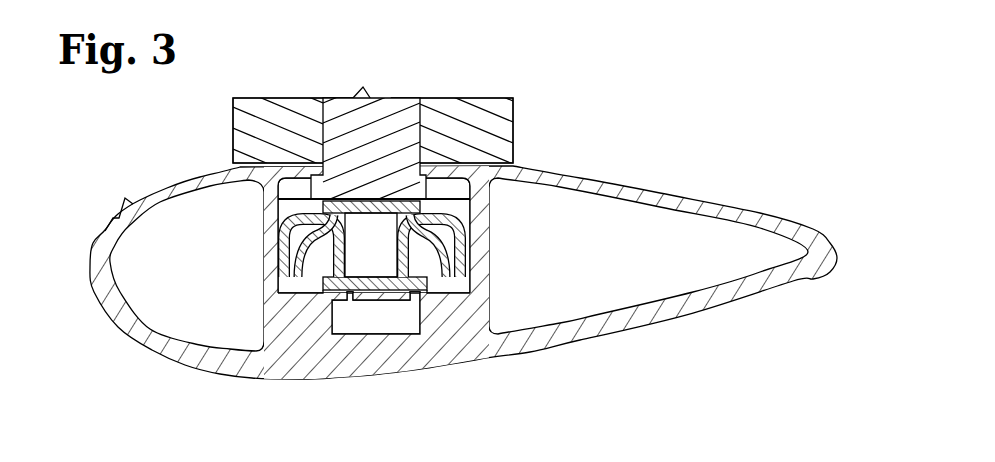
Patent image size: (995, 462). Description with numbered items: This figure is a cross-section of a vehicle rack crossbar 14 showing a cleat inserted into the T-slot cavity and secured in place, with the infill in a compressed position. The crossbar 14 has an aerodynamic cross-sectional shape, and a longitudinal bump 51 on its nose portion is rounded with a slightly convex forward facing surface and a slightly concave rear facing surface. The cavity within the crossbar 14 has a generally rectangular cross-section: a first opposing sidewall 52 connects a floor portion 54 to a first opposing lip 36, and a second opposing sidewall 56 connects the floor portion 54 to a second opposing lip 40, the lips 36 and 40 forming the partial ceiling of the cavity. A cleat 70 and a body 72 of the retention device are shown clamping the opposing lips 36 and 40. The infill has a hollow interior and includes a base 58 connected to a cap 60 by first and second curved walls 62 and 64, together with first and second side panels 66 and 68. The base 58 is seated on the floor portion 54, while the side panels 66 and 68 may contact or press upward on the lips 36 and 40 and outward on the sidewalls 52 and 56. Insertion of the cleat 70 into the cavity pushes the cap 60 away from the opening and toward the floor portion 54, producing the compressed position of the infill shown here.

The crossbar 14 is at (95, 247).
The longitudinal bump 51 is at (121, 206).
The first opposing lip 36 is at (300, 188).
The second opposing lip 40 is at (455, 180).
The body 72 is at (235, 130).
The first side panel 66 is at (323, 200).
The cleat 70 is at (300, 216).
The second side panel 68 is at (466, 216).
The first opposing sidewall 52 is at (280, 242).
The second opposing sidewall 56 is at (466, 268).
The floor portion 54 is at (294, 279).
The cap 60 is at (392, 218).
The first curved wall 62 is at (292, 300).
The second curved wall 64 is at (440, 290).
The base 58 is at (388, 295).